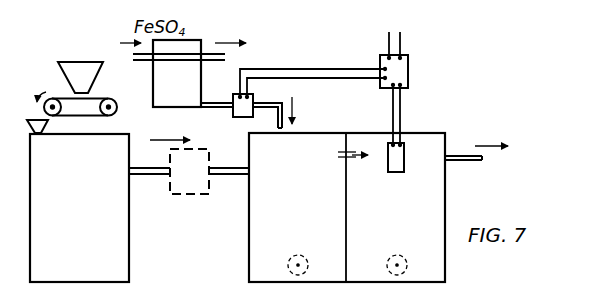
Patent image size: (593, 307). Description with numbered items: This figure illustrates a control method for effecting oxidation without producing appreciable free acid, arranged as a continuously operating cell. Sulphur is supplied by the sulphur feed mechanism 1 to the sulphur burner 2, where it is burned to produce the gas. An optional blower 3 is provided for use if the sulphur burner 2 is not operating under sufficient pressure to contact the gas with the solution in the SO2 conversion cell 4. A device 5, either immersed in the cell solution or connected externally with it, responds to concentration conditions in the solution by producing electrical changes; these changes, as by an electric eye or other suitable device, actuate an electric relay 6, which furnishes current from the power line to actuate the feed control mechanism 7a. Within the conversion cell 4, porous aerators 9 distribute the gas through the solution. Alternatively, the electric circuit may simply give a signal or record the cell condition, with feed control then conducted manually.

The sulphur feed mechanism 1 is at (82, 69).
The sulphur burner 2 is at (79, 208).
The optional blower 3 is at (189, 171).
The SO2 conversion cell 4 is at (347, 207).
The concentration-sensing device 5 is at (405, 150).
The electric relay 6 is at (401, 70).
The feed control mechanism 7a is at (235, 100).
The porous aerators 9 is at (396, 274).